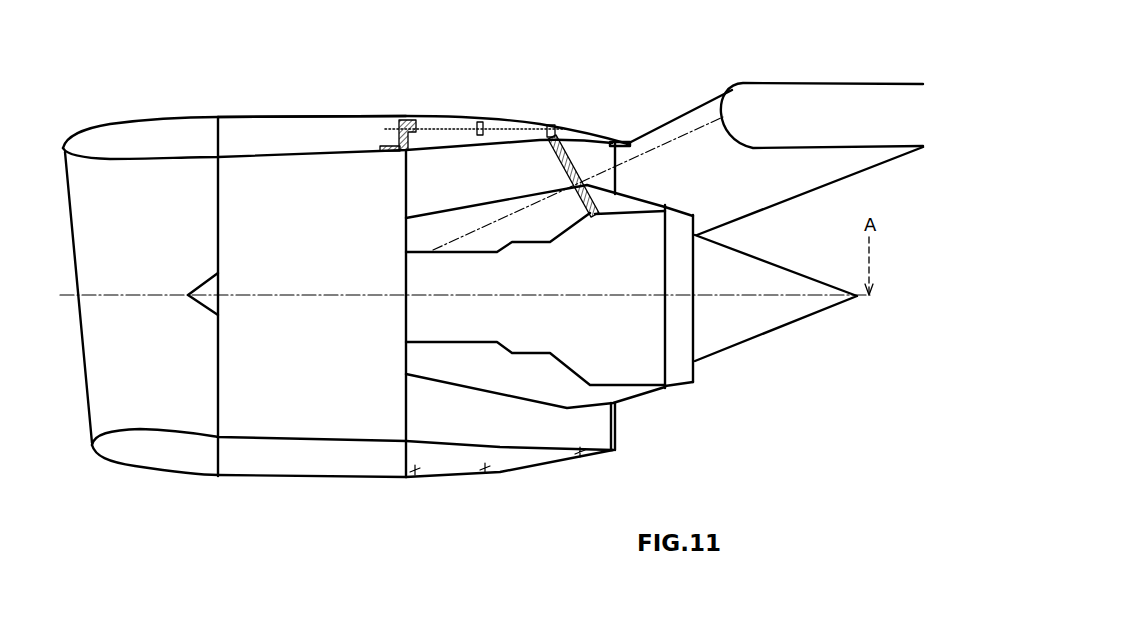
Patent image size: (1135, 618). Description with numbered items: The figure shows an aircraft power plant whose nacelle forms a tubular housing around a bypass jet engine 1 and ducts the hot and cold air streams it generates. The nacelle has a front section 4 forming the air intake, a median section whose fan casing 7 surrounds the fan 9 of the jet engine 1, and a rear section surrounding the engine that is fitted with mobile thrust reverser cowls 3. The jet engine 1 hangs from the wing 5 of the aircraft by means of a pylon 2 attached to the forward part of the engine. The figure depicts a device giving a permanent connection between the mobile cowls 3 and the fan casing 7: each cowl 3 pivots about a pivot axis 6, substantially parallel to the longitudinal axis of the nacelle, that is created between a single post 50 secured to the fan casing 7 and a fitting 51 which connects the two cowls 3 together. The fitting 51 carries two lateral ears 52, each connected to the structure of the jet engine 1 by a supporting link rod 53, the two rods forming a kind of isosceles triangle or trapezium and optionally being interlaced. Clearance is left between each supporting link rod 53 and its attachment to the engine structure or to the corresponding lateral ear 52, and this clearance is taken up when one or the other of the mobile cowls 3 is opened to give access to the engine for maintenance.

The bypass jet engine 1 is at (618, 350).
The pylon 2 is at (713, 103).
The mobile thrust reverser cowl 3 is at (458, 462).
The front section 4 is at (160, 142).
The wing 5 is at (850, 87).
The pivot axis 6 is at (450, 127).
The fan casing 7 is at (275, 150).
The fan 9 is at (202, 287).
The post 50 is at (403, 118).
The fitting 51 is at (548, 122).
The lateral ear 52 is at (545, 140).
The supporting link rod 53 is at (567, 140).